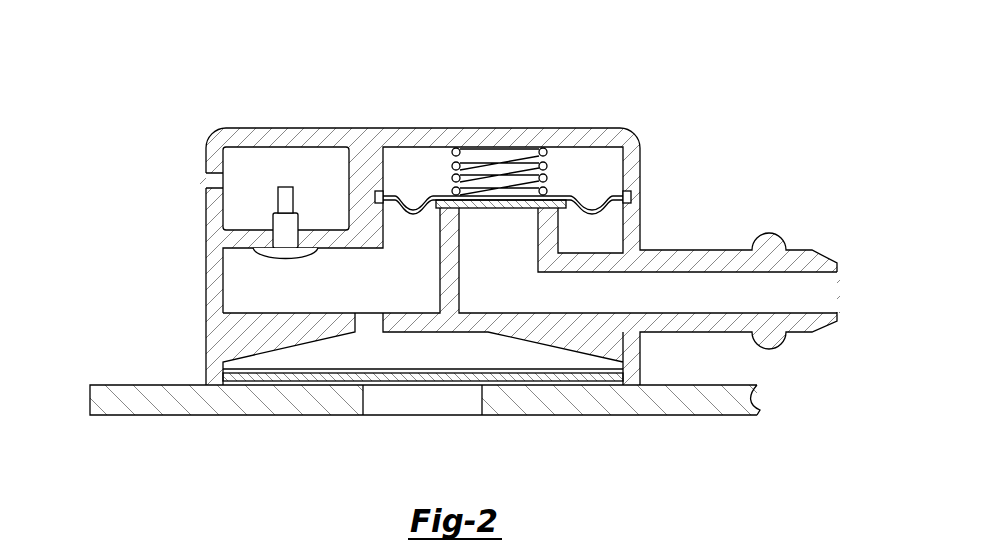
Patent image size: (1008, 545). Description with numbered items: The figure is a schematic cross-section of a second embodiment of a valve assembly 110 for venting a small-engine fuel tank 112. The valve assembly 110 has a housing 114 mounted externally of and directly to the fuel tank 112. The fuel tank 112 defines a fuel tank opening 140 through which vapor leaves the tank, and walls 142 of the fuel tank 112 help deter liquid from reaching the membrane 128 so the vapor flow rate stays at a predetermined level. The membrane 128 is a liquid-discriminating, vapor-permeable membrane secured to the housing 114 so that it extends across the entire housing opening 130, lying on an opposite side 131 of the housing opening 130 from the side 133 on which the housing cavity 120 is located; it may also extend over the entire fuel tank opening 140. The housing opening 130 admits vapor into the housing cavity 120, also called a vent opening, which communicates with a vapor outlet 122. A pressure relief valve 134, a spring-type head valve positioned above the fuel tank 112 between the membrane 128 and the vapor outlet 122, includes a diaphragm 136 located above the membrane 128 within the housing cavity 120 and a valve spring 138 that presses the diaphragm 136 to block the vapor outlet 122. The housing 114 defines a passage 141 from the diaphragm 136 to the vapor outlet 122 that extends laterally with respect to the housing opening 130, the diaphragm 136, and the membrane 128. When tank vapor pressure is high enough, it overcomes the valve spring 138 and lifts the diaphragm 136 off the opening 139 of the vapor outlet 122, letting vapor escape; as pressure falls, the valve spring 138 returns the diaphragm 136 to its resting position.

The valve assembly 110 is at (122, 122).
The fuel tank 112 is at (157, 410).
The housing 114 is at (206, 296).
The housing cavity 120 is at (351, 290).
The vapor outlet 122 is at (822, 293).
The membrane 128 is at (318, 381).
The housing opening 130 is at (372, 320).
The opposite side 131 is at (362, 334).
The side 133 is at (371, 313).
The pressure relief valve 134 is at (572, 160).
The diaphragm 136 is at (438, 194).
The valve spring 138 is at (503, 167).
The opening 139 is at (540, 241).
The fuel tank opening 140 is at (418, 401).
The passage 141 is at (667, 273).
The walls 142 is at (648, 412).